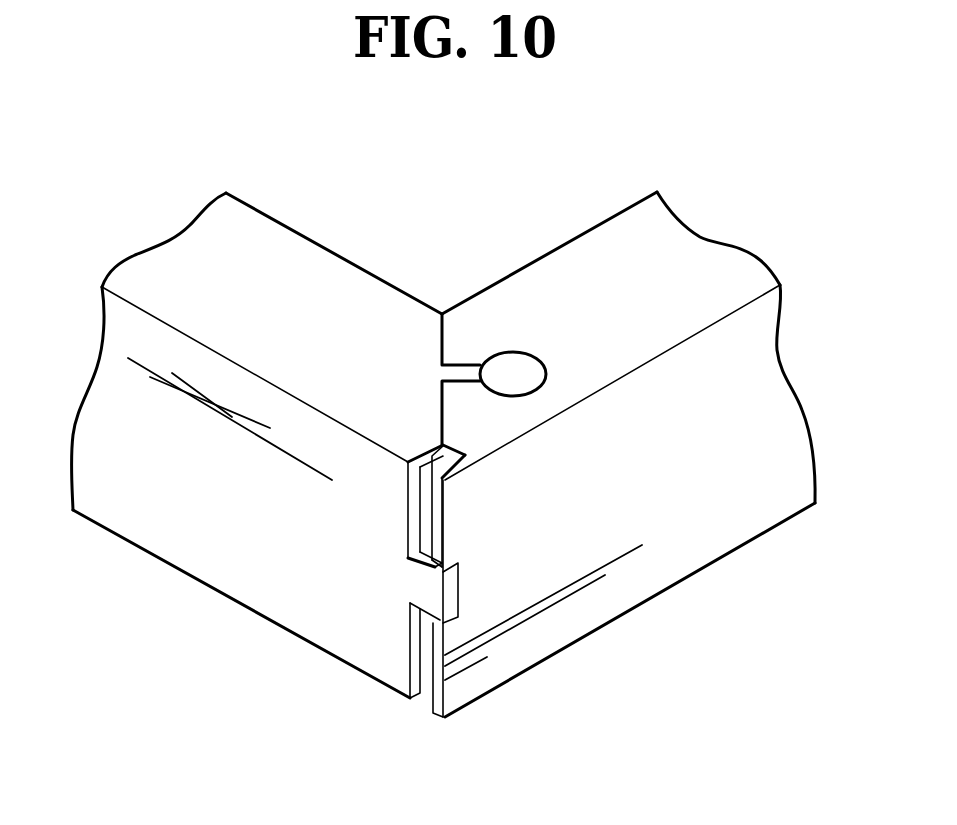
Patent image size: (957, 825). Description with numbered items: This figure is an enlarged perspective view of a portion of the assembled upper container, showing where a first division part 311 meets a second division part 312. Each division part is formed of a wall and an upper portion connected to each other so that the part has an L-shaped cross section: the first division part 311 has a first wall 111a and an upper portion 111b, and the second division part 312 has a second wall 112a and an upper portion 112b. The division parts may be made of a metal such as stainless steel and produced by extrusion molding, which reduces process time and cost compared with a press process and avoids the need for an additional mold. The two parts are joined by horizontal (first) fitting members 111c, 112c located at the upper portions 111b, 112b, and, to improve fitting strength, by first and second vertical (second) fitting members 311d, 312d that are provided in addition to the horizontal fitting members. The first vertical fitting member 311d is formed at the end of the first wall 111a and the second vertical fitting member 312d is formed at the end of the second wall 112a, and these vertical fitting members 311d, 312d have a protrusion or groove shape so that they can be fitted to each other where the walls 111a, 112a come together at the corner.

The first division part 311 is at (150, 198).
The second division part 312 is at (752, 193).
The first wall 111a is at (218, 562).
The upper portion of first division part 111b is at (310, 267).
The horizontal fitting member of first division part 111c is at (503, 367).
The second wall 112a is at (648, 568).
The upper portion of second division part 112b is at (613, 242).
The horizontal fitting member of second division part 112c is at (503, 370).
The first vertical fitting member 311d is at (427, 590).
The second vertical fitting member 312d is at (457, 590).